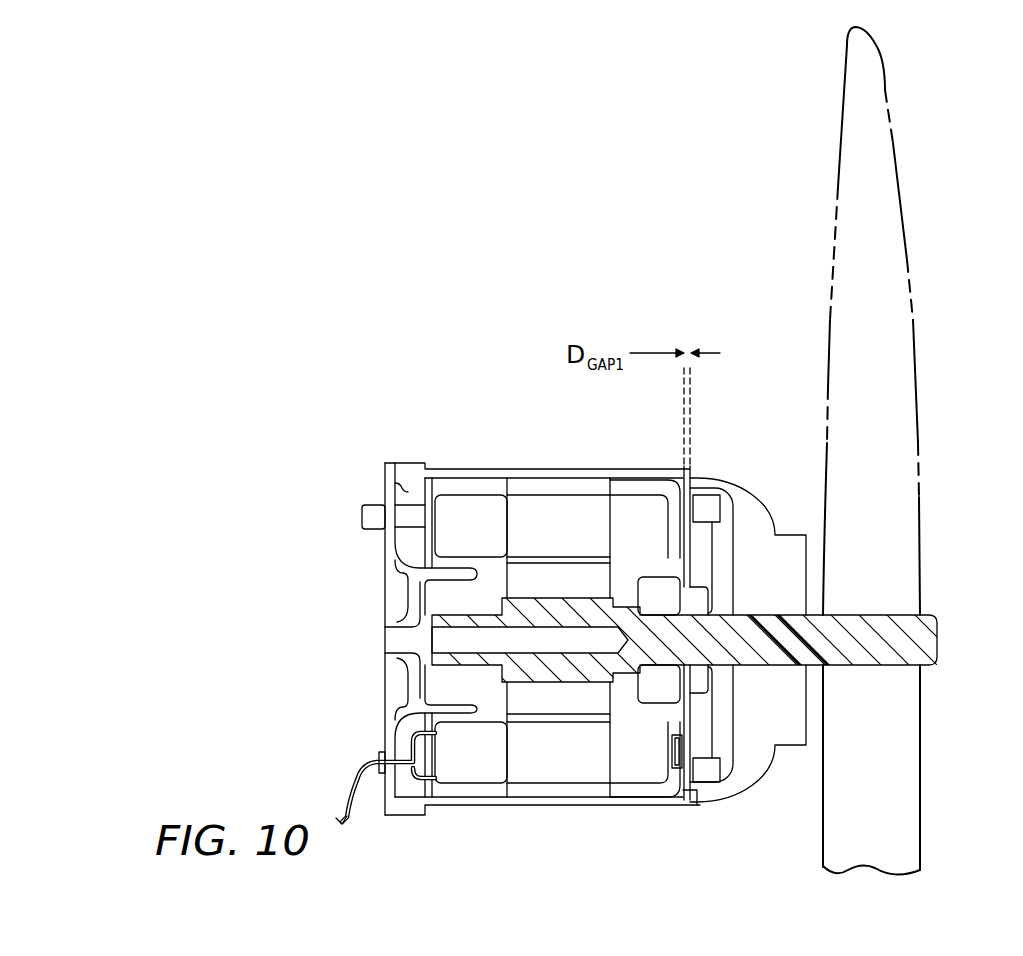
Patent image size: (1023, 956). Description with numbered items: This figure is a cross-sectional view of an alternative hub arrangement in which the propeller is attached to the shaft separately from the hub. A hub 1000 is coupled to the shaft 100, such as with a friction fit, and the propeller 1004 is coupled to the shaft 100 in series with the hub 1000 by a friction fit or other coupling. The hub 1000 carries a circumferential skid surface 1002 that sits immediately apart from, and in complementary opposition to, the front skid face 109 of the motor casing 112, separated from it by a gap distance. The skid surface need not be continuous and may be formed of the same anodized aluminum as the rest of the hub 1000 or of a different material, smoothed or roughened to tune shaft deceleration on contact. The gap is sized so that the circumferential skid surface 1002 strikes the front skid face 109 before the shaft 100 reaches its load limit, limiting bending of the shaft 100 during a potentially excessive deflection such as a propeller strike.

The shaft 100 is at (743, 615).
The front skid face 109 is at (695, 800).
The motor casing 112 is at (470, 805).
The hub 1000 is at (699, 478).
The circumferential skid surface 1002 is at (683, 473).
The propeller 1004 is at (900, 182).